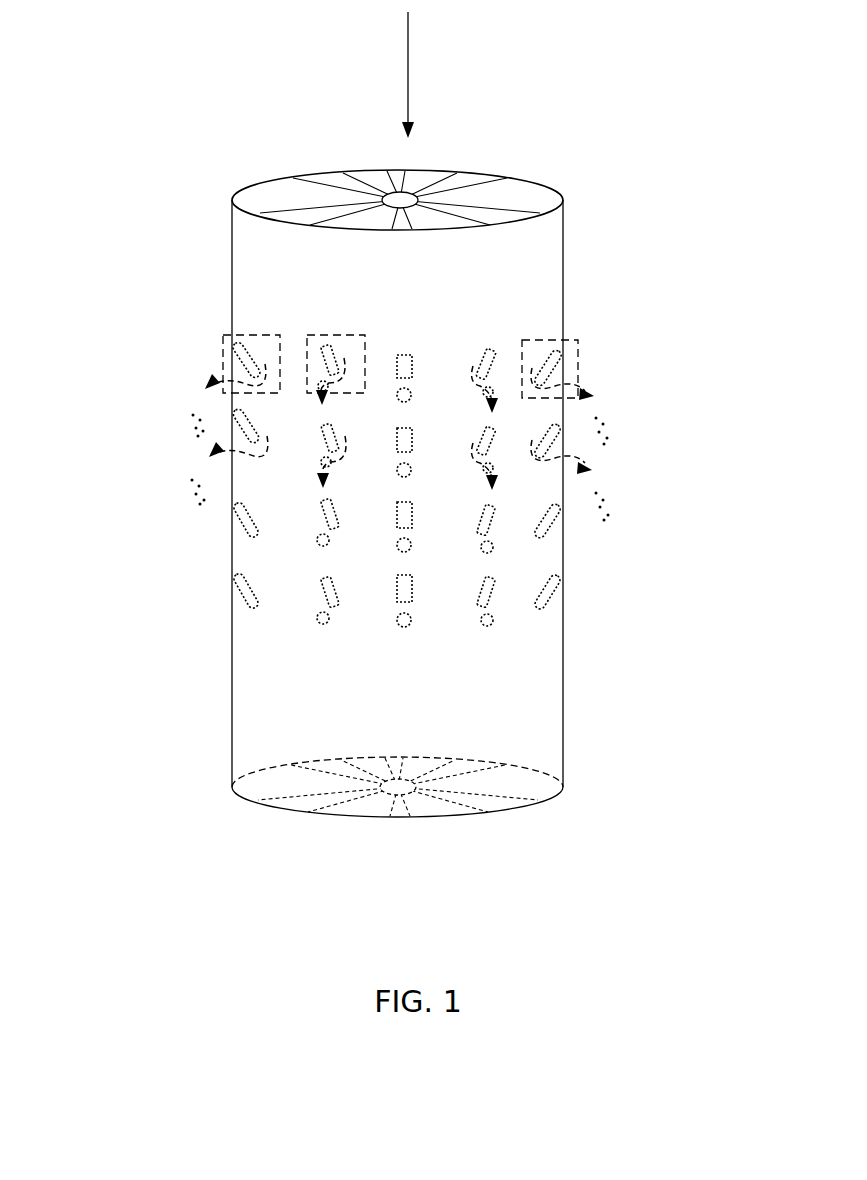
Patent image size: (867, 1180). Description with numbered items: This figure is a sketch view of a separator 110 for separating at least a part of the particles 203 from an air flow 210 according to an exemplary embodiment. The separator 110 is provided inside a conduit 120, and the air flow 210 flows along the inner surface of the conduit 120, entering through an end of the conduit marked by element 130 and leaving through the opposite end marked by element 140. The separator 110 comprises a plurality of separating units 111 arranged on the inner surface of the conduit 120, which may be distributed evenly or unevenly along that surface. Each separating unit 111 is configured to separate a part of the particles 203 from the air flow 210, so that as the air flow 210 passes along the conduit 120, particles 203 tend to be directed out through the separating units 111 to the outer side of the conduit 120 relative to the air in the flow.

The separator 110 is at (173, 145).
The separating unit 111 is at (245, 337).
The conduit 120 is at (565, 262).
The top cap with spokes 130 is at (313, 172).
The bottom cap with spokes 140 is at (487, 802).
The particles 203 is at (212, 378).
The air flow 210 is at (408, 85).